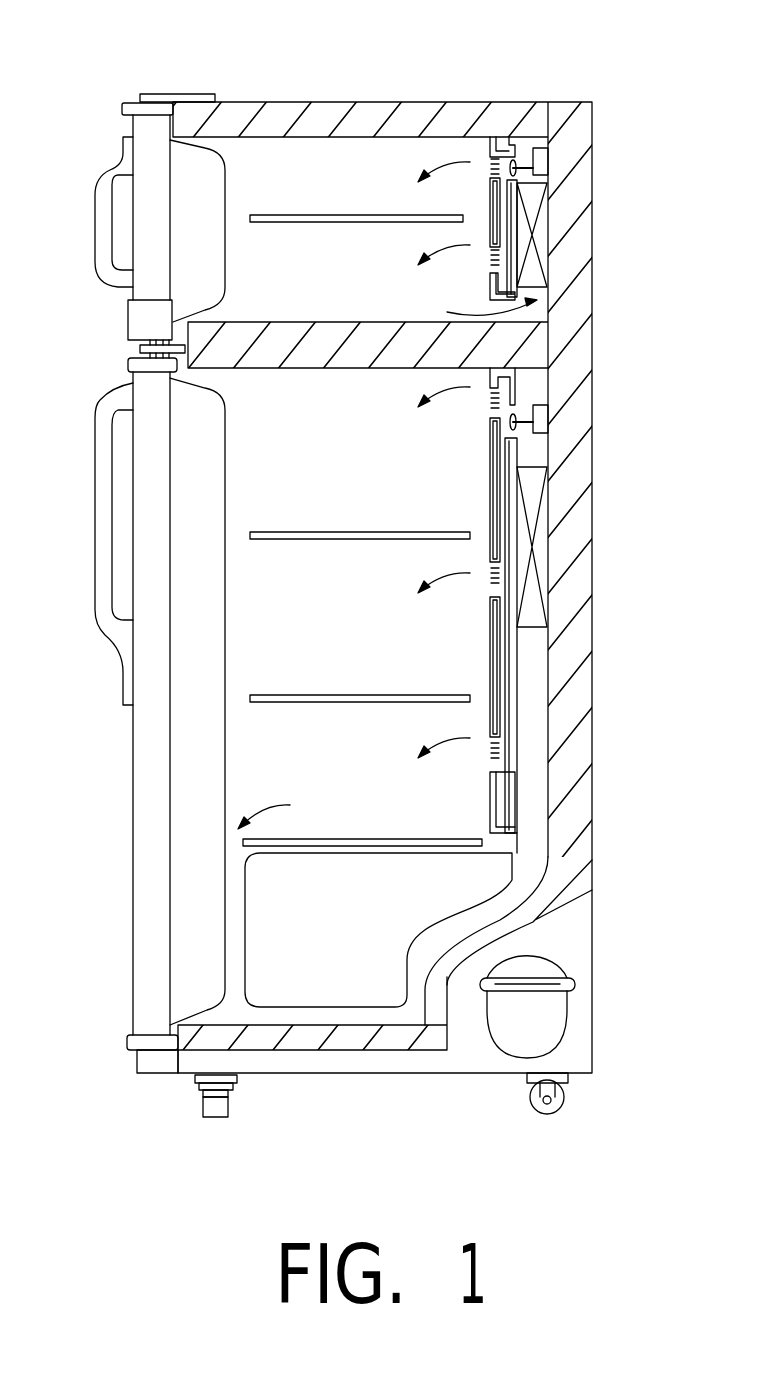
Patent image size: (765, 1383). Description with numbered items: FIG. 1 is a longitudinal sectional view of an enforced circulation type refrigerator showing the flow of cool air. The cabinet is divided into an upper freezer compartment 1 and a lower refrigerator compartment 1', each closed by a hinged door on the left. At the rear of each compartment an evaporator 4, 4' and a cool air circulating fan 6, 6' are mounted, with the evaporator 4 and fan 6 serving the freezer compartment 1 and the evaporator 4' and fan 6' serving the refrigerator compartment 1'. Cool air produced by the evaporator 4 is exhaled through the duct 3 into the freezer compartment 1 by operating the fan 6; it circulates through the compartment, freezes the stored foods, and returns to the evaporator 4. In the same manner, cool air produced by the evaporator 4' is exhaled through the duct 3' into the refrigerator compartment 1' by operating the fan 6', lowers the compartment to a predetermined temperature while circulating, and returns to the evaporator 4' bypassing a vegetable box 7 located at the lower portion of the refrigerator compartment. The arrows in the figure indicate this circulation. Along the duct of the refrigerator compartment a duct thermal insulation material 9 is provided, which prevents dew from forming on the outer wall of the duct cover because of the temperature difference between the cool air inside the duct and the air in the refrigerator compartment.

The freezer compartment 1 is at (382, 541).
The refrigerator compartment 1' is at (268, 744).
The duct 3 is at (583, 227).
The duct 3' is at (593, 645).
The evaporator 4 is at (597, 235).
The evaporator 4' is at (599, 547).
The cool air circulating fan 6 is at (593, 91).
The cool air circulating fan 6' is at (596, 395).
The vegetable box 7 is at (490, 875).
The duct thermal insulation material 9 is at (502, 718).